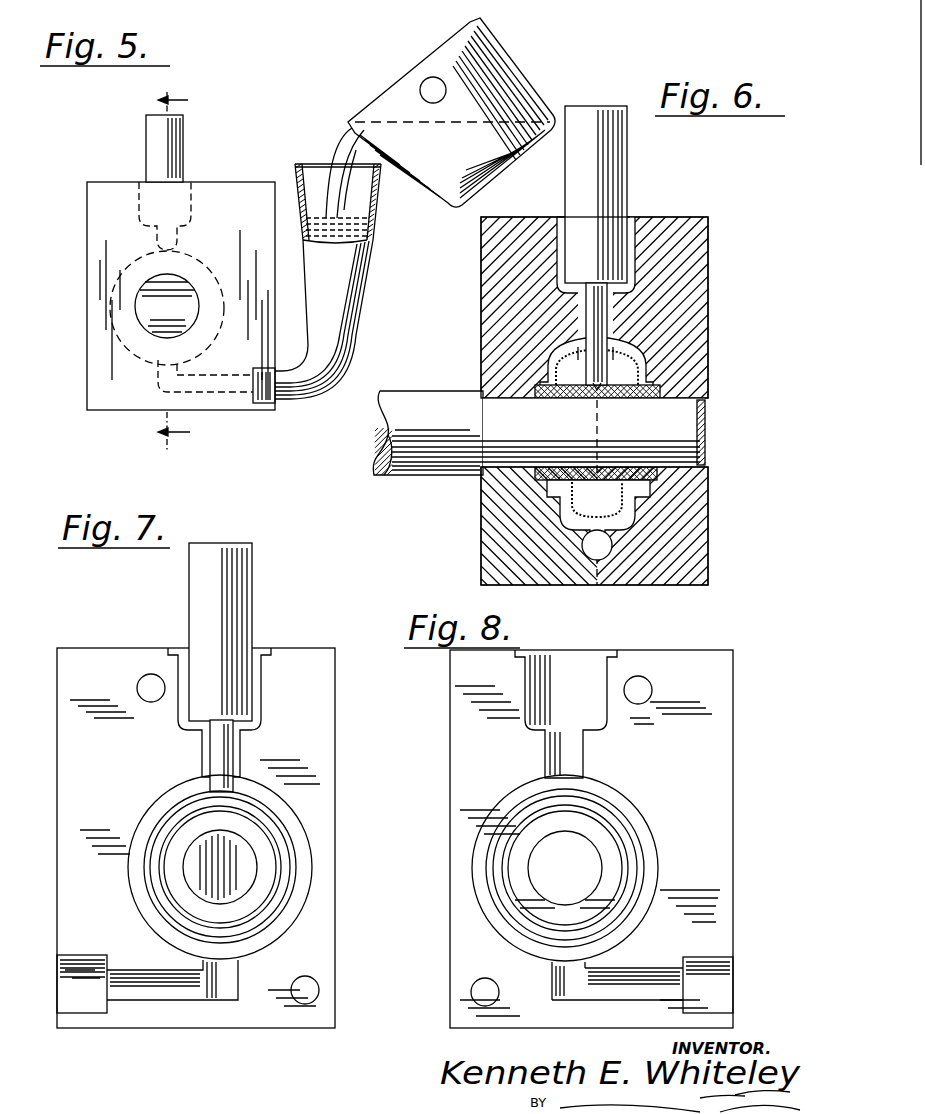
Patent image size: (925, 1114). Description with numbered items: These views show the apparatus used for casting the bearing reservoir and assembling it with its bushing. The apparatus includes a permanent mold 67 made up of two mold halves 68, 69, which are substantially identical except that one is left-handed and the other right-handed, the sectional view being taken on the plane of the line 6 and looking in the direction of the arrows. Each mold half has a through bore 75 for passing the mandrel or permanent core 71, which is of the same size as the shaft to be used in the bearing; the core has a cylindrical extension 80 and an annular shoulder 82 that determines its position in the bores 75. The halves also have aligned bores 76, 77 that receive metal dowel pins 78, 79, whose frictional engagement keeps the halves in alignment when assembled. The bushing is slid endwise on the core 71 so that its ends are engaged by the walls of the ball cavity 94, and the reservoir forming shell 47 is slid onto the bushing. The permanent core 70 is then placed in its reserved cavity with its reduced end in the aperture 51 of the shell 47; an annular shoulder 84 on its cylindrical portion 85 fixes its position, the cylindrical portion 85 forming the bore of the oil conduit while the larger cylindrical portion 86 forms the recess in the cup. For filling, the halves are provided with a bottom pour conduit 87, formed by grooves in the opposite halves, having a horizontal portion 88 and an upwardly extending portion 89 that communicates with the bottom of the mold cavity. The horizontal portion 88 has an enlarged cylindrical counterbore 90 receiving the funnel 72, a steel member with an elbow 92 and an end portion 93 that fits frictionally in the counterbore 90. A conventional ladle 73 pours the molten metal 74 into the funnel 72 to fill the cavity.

In FIG. 5, the section line 6— 6 is at (169, 273).
In FIG. 6, the reservoir forming shell 47 is at (635, 360).
In FIG. 7, the reservoir forming shell 47 is at (159, 799).
In FIG. 8, the reservoir forming shell 47 is at (565, 868).
In FIG. 6, the aperture 51 is at (572, 375).
In FIG. 6, the permanent mold 67 is at (708, 222).
In FIG. 8, the permanent mold 67 is at (708, 832).
In FIG. 5, the mold half 68 is at (97, 370).
In FIG. 6, the mold half 68 is at (492, 568).
In FIG. 7, the mold half 68 is at (80, 923).
In FIG. 6, the mold half 69 is at (700, 563).
In FIG. 5, the permanent core 70 is at (186, 153).
In FIG. 6, the permanent core 70 is at (612, 160).
In FIG. 7, the permanent core 70 is at (238, 596).
In FIG. 6, the mandrel or permanent core 71 is at (678, 417).
In FIG. 7, the mandrel or permanent core 71 is at (245, 866).
In FIG. 5, the funnel 72 is at (352, 285).
In FIG. 5, the ladle 73 is at (482, 60).
In FIG. 5, the molten metal 74 is at (350, 133).
In FIG. 6, the through bore 75 is at (483, 400).
In FIG. 8, the aligned bore 76 is at (640, 680).
In FIG. 8, the aligned bore 77 is at (484, 978).
In FIG. 8, the metal dowel pin 78 is at (648, 705).
In FIG. 8, the metal dowel pin 79 is at (464, 1006).
In FIG. 5, the cylindrical extension 80 is at (140, 303).
In FIG. 6, the cylindrical extension 80 is at (410, 476).
In FIG. 6, the annular shoulder 82 is at (483, 485).
In FIG. 6, the annular shoulder 84 is at (600, 352).
In FIG. 6, the cylindrical portion 85 is at (605, 312).
In FIG. 7, the cylindrical portion 85 is at (222, 750).
In FIG. 6, the larger cylindrical portion 86 is at (616, 243).
In FIG. 7, the bottom pour conduit 87 is at (209, 1004).
In FIG. 7, the horizontal portion 88 is at (165, 1003).
In FIG. 8, the horizontal portion 88 is at (590, 1003).
In FIG. 6, the upwardly extending portion 89 is at (606, 540).
In FIG. 7, the upwardly extending portion 89 is at (240, 972).
In FIG. 8, the upwardly extending portion 89 is at (552, 978).
In FIG. 7, the enlarged cylindrical counterbore 90 is at (95, 1015).
In FIG. 8, the enlarged cylindrical counterbore 90 is at (728, 958).
In FIG. 5, the elbow 92 is at (367, 346).
In FIG. 5, the end portion 93 is at (264, 406).
In FIG. 6, the ball cavity 94 is at (520, 222).
In FIG. 7, the ball cavity 94 is at (182, 840).